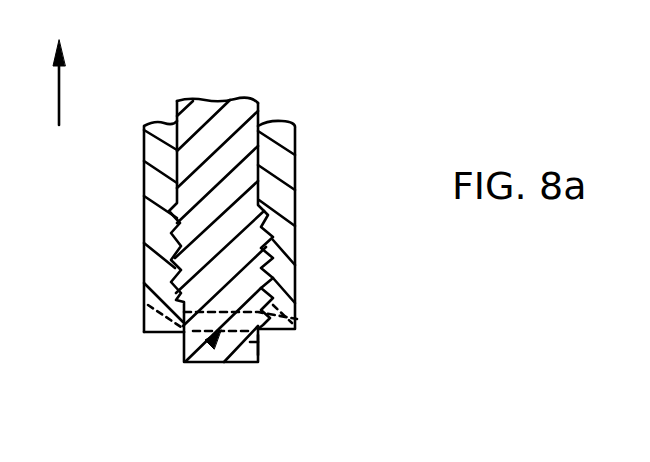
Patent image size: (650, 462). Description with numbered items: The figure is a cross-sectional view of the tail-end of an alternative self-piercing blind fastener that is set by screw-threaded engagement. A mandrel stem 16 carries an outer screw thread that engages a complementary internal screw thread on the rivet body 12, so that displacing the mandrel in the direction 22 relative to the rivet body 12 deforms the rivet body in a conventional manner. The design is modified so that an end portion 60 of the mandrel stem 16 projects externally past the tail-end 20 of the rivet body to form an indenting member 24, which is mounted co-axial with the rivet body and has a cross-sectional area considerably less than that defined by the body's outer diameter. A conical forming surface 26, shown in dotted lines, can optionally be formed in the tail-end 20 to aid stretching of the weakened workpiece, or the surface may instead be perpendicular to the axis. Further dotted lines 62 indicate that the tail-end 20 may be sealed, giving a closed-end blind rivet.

The direction 22 is at (129, 28).
The tail-end 20 is at (150, 268).
The rivet body 12 is at (289, 245).
The mandrel stem 16 is at (243, 168).
The indenting member 24 is at (233, 362).
The conical forming surface 26 is at (398, 275).
The end portion 60 is at (258, 344).
The dotted lines 62 is at (184, 351).